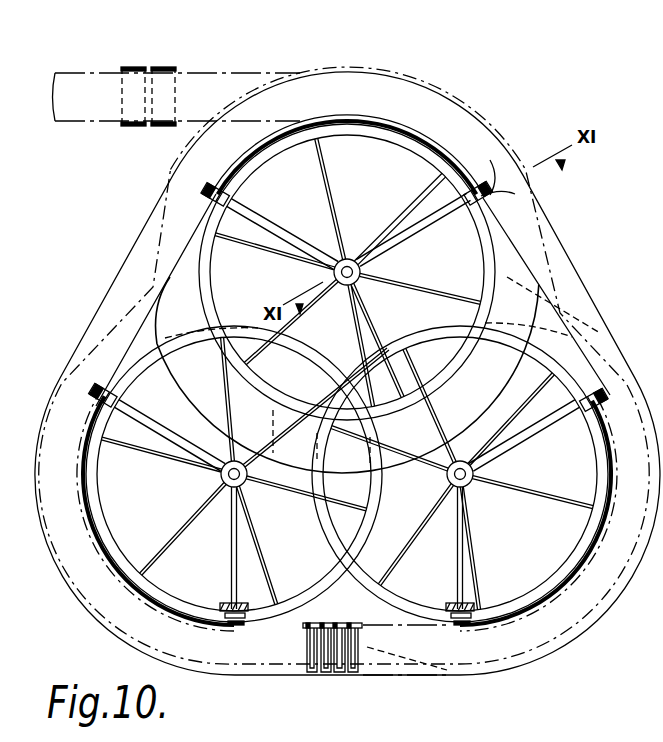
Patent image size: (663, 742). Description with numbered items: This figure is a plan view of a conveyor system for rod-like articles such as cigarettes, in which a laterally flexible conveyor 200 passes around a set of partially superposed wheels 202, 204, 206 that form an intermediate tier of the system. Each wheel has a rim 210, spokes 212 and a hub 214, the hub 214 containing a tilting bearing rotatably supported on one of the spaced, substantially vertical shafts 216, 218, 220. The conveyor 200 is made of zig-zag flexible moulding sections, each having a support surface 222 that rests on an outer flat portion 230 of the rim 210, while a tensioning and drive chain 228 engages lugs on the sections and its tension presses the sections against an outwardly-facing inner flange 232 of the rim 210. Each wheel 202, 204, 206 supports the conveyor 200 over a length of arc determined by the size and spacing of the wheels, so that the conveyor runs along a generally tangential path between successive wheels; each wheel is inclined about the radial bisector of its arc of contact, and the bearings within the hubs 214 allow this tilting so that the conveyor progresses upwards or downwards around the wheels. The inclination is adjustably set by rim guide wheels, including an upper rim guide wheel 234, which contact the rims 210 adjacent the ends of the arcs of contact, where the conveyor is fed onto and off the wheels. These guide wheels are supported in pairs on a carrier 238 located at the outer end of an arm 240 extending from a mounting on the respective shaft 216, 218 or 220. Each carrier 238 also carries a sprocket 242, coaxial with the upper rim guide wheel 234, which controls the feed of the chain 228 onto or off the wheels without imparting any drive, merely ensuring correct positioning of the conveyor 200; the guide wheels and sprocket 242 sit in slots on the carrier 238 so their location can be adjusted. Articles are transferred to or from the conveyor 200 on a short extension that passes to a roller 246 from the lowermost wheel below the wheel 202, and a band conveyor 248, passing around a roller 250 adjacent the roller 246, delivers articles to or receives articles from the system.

The laterally flexible conveyor 200 is at (233, 86).
The wheel 202 is at (390, 148).
The wheel 204 is at (157, 363).
The wheel 206 is at (593, 463).
The rim 210 is at (418, 155).
The spokes 212 is at (257, 247).
The hub 214 is at (373, 266).
The vertical shaft 216 is at (350, 257).
The vertical shaft 218 is at (228, 492).
The vertical shaft 220 is at (470, 493).
The support surface 222 is at (348, 673).
The tensioning and drive chain 228 is at (303, 627).
The outer flat portion 230 is at (238, 402).
The inner flange 232 is at (427, 403).
The upper rim guide wheel 234 is at (490, 160).
The carrier 238 is at (463, 173).
The arm 240 is at (273, 227).
The sprocket 242 is at (515, 194).
The roller 246 is at (172, 68).
The band conveyor 248 is at (87, 80).
The roller 250 is at (132, 68).